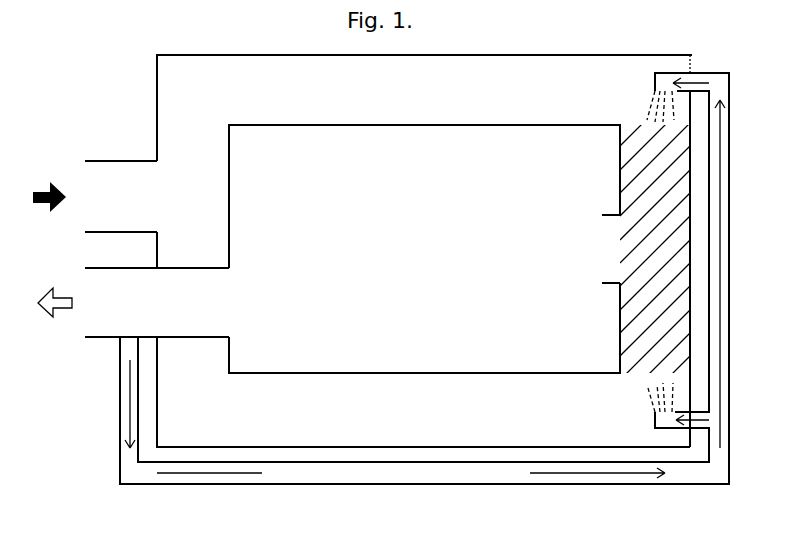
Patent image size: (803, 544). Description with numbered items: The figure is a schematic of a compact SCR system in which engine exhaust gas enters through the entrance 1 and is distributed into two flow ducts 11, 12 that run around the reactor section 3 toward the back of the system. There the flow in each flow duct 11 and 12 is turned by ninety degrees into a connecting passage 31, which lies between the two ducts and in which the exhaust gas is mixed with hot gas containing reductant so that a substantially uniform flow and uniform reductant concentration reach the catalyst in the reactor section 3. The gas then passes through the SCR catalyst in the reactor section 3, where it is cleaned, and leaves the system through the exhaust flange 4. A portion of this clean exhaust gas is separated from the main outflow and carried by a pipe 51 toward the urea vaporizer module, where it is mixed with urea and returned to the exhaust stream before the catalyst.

The entrance 1 is at (95, 196).
The flow duct 11 is at (424, 161).
The reactor section 3 is at (424, 249).
The exhaust flange 4 is at (133, 302).
The flow duct 12 is at (423, 392).
The connecting passage 31 is at (655, 251).
The pipe 51 is at (132, 352).